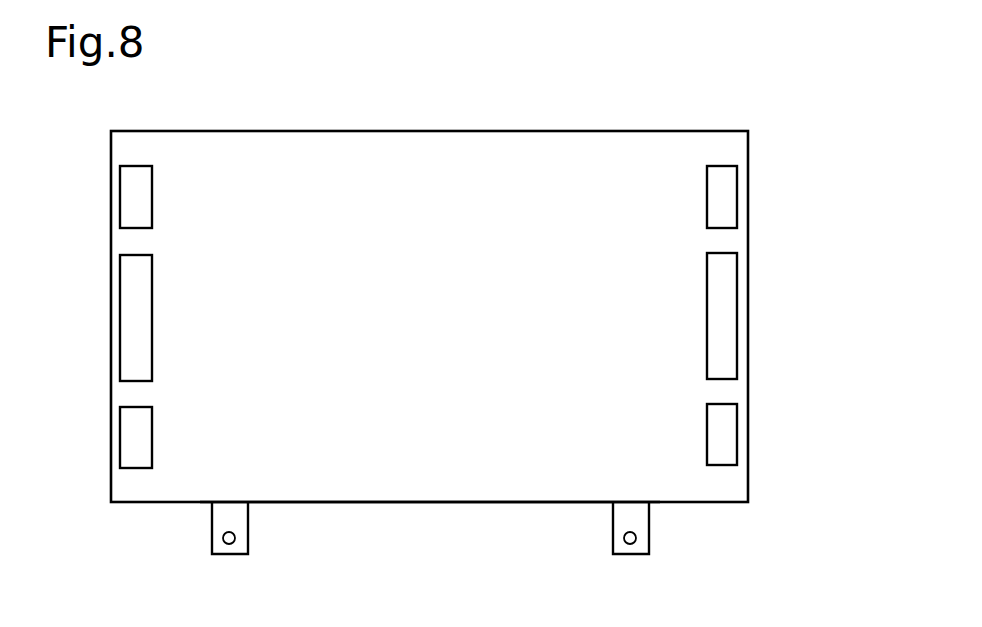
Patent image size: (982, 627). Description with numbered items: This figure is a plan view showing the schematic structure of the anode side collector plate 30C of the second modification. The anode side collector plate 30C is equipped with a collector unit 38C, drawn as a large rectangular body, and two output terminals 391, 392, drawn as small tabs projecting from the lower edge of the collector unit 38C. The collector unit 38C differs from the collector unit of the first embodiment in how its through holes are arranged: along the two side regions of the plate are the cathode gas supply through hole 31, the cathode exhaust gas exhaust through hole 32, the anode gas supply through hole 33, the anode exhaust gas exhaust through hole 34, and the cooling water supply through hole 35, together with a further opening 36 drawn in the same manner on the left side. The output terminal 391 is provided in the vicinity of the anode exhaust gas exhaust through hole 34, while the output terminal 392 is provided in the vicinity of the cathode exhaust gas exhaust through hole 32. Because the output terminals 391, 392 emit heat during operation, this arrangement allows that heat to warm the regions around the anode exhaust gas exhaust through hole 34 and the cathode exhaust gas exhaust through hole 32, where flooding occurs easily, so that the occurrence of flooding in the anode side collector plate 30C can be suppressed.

The anode side collector plate 30C is at (612, 565).
The cathode gas supply through hole 31 is at (727, 188).
The cathode exhaust gas exhaust through hole 32 is at (132, 435).
The anode gas supply through hole 33 is at (132, 189).
The anode exhaust gas exhaust through hole 34 is at (727, 430).
The cooling water supply through hole 35 is at (727, 313).
The sixth terminal 36 is at (132, 313).
The collector unit 38C is at (417, 503).
The output terminal 391 is at (612, 524).
The output terminal 392 is at (249, 524).